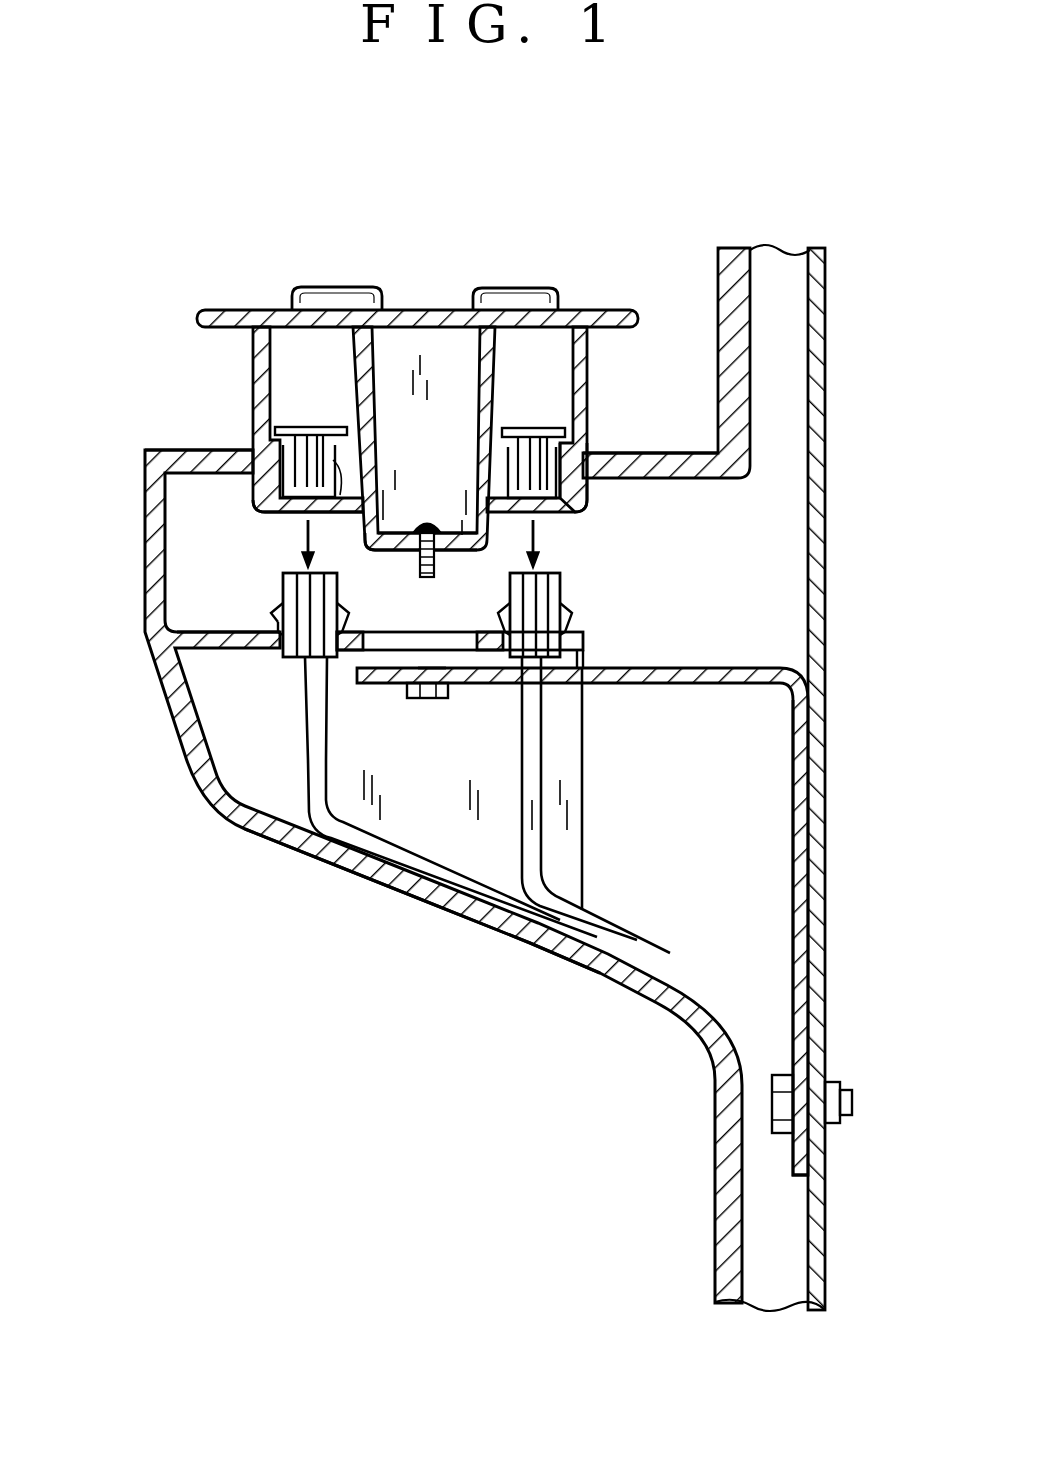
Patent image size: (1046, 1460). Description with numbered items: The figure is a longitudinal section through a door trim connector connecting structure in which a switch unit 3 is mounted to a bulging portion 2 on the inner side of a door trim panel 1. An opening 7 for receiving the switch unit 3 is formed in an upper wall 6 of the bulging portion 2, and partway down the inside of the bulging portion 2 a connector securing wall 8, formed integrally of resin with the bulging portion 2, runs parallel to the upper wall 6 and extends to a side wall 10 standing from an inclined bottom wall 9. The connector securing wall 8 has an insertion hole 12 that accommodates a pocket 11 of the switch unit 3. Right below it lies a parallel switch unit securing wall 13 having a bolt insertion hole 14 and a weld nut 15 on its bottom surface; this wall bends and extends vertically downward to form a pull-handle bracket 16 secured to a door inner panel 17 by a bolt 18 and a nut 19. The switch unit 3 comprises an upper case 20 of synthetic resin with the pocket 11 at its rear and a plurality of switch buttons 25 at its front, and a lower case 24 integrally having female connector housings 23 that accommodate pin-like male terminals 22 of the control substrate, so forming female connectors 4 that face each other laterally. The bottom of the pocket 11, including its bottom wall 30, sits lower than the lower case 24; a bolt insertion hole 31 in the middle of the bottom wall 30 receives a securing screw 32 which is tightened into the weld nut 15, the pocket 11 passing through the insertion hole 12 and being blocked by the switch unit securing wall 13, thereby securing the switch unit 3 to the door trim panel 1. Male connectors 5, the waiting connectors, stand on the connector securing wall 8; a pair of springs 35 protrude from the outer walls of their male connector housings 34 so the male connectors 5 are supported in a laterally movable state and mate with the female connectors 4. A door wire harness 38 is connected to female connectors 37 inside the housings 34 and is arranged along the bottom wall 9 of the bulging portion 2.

The door trim panel 1 is at (716, 283).
The bulging portion 2 is at (143, 490).
The switch unit 3 is at (547, 268).
The female connectors 4 is at (283, 505).
The male connectors 5 is at (281, 584).
The upper wall 6 is at (192, 450).
The opening 7 is at (600, 463).
The connector securing wall 8 is at (226, 652).
The inclined bottom wall 9 is at (377, 876).
The side wall 10 is at (584, 821).
The pocket 11 is at (487, 386).
The insertion hole 12 is at (370, 653).
The switch unit securing wall 13 is at (477, 684).
The bolt insertion hole 14 is at (433, 666).
The weld nut 15 is at (430, 699).
The pull-handle bracket 16 is at (793, 960).
The door inner panel 17 is at (828, 615).
The bolt 18 is at (780, 1122).
The nut 19 is at (835, 1120).
The upper case 20 is at (195, 318).
The male terminals 22 is at (303, 505).
The female connector housings 23 is at (362, 515).
The lower case 24 is at (589, 500).
The switch buttons 25 is at (357, 295).
The bottom wall 30 is at (388, 552).
The bolt insertion hole 31 is at (438, 520).
The securing screw 32 is at (418, 522).
The male connector housings 34 is at (273, 604).
The springs 35 is at (268, 626).
The female connectors 37 is at (306, 770).
The door wire harness 38 is at (322, 772).